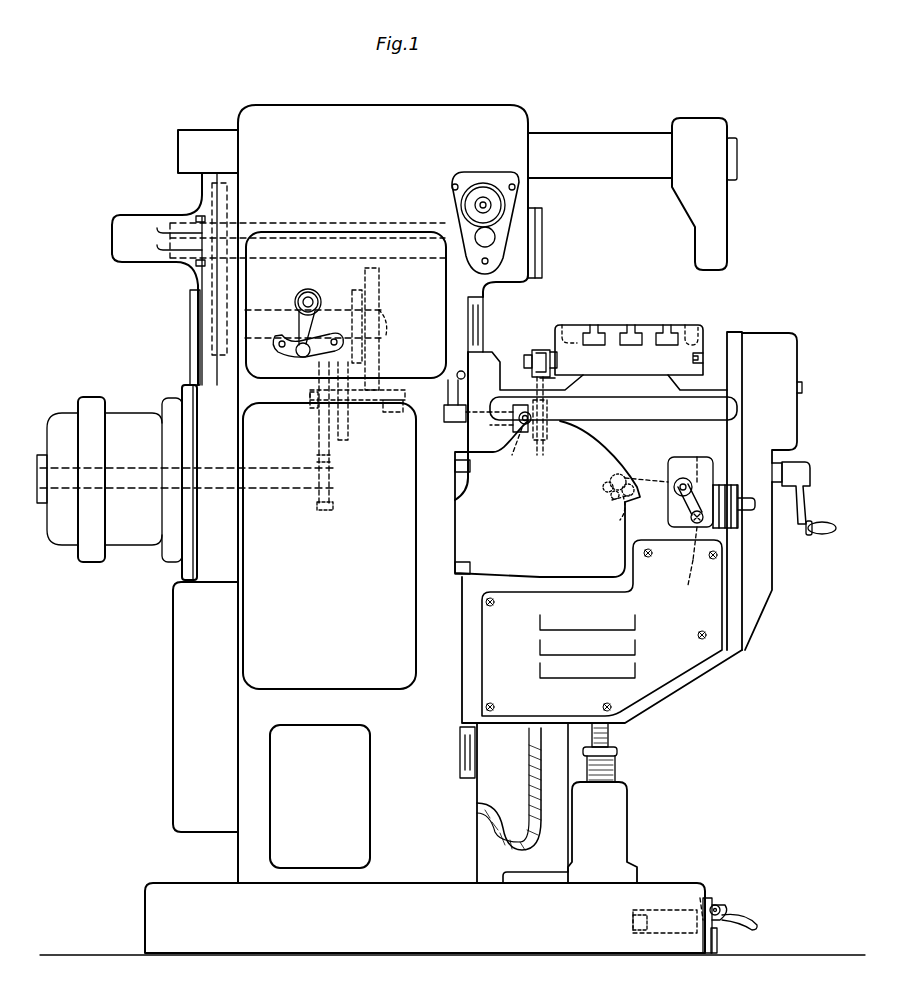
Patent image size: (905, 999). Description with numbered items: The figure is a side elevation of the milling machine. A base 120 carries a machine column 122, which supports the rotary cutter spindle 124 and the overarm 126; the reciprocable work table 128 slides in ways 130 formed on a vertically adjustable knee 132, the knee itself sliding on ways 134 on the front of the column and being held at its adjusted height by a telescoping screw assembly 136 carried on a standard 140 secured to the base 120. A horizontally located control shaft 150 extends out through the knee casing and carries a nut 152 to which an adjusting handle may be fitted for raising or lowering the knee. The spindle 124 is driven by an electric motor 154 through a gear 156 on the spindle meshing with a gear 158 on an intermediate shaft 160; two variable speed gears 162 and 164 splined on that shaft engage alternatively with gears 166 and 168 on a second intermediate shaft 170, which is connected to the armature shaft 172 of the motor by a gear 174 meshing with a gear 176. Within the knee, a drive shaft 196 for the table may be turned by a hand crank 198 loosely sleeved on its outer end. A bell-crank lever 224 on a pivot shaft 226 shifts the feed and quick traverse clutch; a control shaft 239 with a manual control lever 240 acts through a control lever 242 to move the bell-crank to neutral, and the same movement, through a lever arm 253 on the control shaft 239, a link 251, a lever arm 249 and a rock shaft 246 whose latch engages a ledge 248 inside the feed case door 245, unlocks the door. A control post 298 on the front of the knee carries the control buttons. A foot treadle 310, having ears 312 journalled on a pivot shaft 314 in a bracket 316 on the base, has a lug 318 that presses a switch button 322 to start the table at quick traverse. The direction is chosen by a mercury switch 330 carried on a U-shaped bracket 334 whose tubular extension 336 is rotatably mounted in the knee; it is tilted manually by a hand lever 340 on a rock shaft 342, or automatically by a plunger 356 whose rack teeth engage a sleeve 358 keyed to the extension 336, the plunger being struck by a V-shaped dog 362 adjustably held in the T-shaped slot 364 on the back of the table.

The base 120 is at (463, 945).
The machine column 122 is at (348, 118).
The rotary cutter spindle 124 is at (542, 250).
The overarm 126 is at (614, 142).
The reciprocable work table 128 is at (648, 325).
The ways 130 is at (690, 378).
The vertically adjustable knee 132 is at (705, 667).
The ways 134 is at (478, 318).
The telescoping screw assembly 136 is at (612, 740).
The standard 140 is at (615, 810).
The control shaft 150 is at (752, 505).
The nut 152 is at (741, 512).
The electric motor 154 is at (136, 527).
The gear 156 is at (228, 194).
The gear 158 is at (210, 385).
The intermediate shaft 160 is at (245, 318).
The variable speed gear 162 is at (355, 290).
The variable speed gear 164 is at (378, 272).
The gear 166 is at (346, 442).
The gear 168 is at (390, 412).
The intermediate shaft 170 is at (316, 408).
The armature shaft 172 is at (284, 492).
The gear 174 is at (319, 448).
The gear 176 is at (330, 510).
The drive shaft 196 is at (777, 470).
The hand crank 198 is at (822, 536).
The bell-crank lever 224 is at (633, 920).
The pivot shaft 226 is at (682, 572).
The control shaft 239 is at (690, 522).
The manual control lever 240 is at (672, 502).
The control lever 242 is at (682, 545).
The feed case door 245 is at (522, 535).
The rock shaft 246 is at (615, 500).
The ledge 248 is at (612, 492).
The lever arm 249 is at (608, 483).
The link 251 is at (624, 478).
The lever arm 253 is at (706, 470).
The control post 298 is at (780, 345).
The foot treadle 310 is at (738, 916).
The ears 312 is at (720, 925).
The pivot shaft 314 is at (718, 905).
The bracket 316 is at (708, 953).
The lug 318 is at (715, 930).
The switch button 322 is at (703, 898).
The mercury switch 330 is at (512, 425).
The U-shaped bracket 334 is at (511, 449).
The tubular extension 336 is at (560, 423).
The hand lever 340 is at (458, 372).
The rock shaft 342 is at (460, 424).
The plunger 356 is at (548, 440).
The sleeve 358 is at (548, 398).
The V-shaped dog 362 is at (540, 368).
The T-shaped slot 364 is at (557, 360).